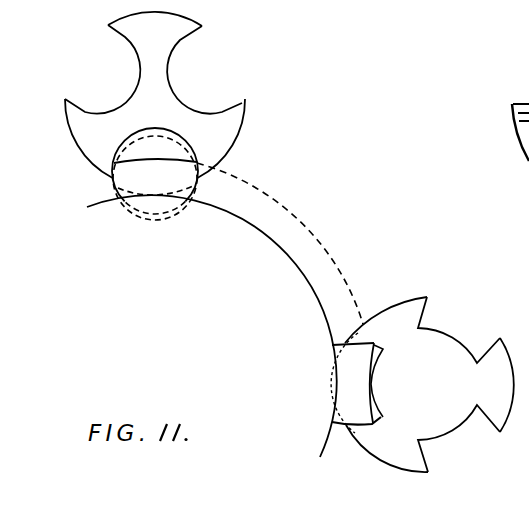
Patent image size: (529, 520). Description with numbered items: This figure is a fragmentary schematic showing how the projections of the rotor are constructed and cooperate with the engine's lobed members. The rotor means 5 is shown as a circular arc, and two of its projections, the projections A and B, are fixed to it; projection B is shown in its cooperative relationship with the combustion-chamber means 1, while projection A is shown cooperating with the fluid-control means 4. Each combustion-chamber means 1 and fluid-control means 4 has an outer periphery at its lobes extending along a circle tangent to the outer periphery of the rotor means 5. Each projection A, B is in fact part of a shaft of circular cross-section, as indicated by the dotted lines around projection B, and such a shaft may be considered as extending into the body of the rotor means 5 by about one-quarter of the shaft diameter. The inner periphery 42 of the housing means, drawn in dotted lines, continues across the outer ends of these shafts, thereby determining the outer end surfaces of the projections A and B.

The combustion-chamber means 1 is at (228, 125).
The fluid-control means 4 is at (403, 316).
The rotor means 5 is at (278, 272).
The inner circular periphery of the housing means 42 is at (256, 186).
The projection A is at (357, 384).
The projection B is at (155, 174).